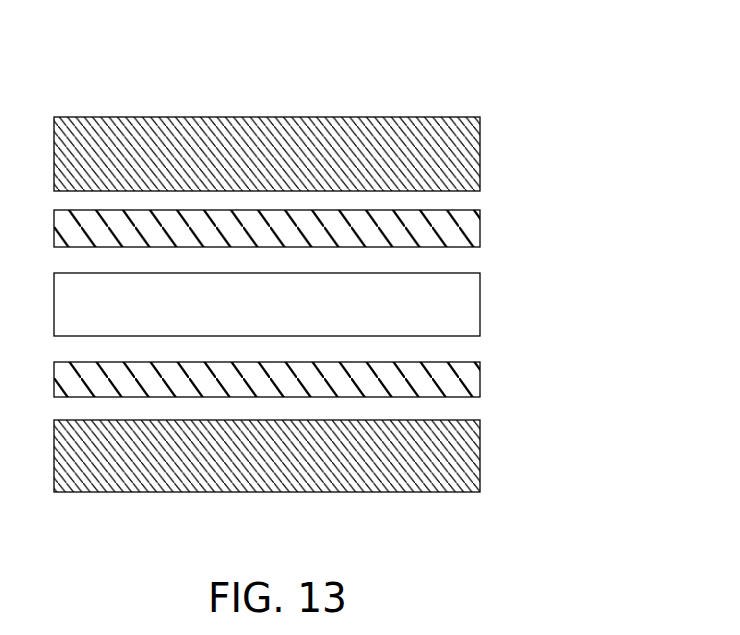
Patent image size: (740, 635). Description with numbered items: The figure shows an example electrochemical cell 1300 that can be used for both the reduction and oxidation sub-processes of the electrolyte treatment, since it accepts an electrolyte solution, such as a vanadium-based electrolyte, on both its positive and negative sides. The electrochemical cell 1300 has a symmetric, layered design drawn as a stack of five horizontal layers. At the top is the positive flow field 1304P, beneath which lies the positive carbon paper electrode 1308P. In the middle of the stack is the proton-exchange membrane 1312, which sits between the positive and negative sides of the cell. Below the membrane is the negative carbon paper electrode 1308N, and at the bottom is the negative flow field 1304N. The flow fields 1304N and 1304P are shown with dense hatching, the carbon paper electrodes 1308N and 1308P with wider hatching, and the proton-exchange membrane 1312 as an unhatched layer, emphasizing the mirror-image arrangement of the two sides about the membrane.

The electrochemical cell 1300 is at (458, 58).
The positive flow field 1304P is at (481, 153).
The positive carbon paper electrode 1308P is at (481, 228).
The proton-exchange membrane 1312 is at (481, 303).
The negative carbon paper electrode 1308N is at (481, 378).
The negative flow field 1304N is at (481, 455).